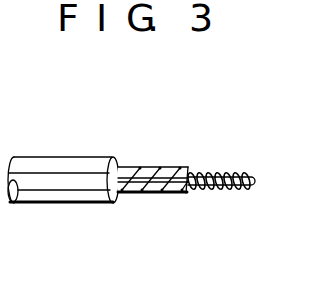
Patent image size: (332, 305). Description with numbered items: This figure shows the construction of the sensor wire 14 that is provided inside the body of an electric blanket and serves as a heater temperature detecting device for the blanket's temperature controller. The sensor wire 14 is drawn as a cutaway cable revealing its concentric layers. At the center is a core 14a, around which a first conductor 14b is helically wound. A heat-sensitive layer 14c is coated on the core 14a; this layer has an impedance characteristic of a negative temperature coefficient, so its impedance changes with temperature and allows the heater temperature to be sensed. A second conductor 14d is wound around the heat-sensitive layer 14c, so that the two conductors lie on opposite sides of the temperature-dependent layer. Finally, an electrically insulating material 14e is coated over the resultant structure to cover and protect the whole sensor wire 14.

The sensor wire 14 is at (147, 140).
The core 14a is at (243, 171).
The first conductor 14b is at (236, 192).
The heat-sensitive layer 14c is at (174, 194).
The second conductor 14d is at (165, 193).
The electrically insulating material 14e is at (70, 156).